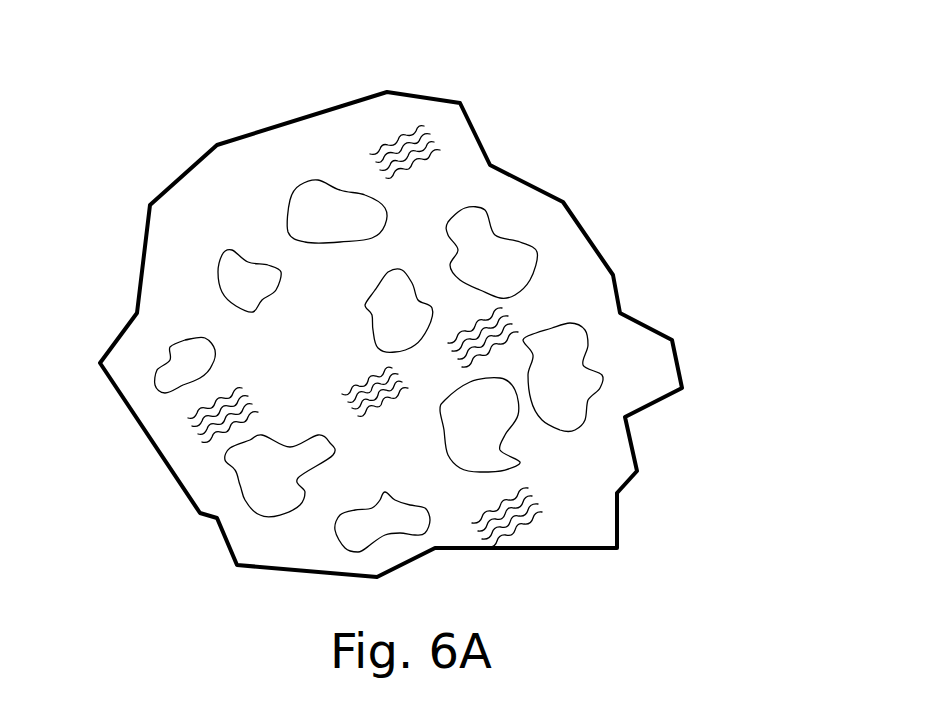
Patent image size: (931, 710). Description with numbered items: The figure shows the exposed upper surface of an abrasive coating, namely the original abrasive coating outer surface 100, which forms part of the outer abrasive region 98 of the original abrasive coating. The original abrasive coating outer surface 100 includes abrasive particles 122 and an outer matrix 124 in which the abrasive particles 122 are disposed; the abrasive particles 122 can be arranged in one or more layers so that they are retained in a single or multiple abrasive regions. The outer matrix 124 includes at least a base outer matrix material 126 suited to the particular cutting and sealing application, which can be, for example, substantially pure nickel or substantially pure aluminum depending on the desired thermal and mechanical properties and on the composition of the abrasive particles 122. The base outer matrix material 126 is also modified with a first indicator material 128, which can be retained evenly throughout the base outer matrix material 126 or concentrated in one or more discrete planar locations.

The outer abrasive region 98 is at (292, 169).
The original abrasive coating outer surface 100 is at (668, 178).
The abrasive particles 122 is at (448, 244).
The outer matrix 124 is at (183, 244).
The base outer matrix material 126 is at (383, 118).
The first indicator material 128 is at (435, 180).